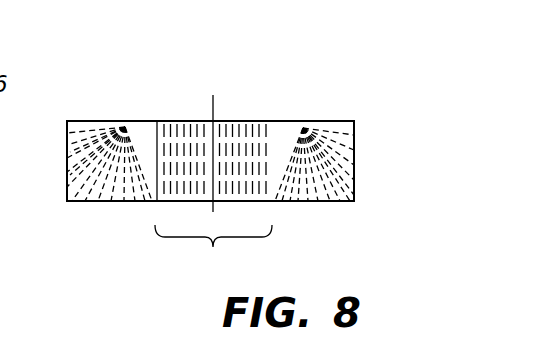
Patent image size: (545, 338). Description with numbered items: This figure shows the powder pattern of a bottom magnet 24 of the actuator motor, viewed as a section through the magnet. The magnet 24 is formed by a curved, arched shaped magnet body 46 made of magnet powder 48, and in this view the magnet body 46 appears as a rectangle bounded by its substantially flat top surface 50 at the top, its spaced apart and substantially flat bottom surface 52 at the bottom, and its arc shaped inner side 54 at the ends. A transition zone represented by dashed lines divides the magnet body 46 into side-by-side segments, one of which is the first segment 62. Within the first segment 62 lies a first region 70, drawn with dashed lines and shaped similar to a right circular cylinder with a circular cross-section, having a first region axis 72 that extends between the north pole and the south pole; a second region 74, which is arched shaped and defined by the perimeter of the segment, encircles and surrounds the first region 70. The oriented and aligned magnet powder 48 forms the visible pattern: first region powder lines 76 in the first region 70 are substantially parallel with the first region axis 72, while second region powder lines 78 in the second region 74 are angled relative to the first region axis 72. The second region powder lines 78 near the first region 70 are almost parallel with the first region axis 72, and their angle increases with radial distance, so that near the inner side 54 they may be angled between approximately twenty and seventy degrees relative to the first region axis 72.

The magnet 24 is at (351, 90).
The magnet body 46 is at (360, 176).
The magnet powder 48 is at (85, 173).
The top surface 50 is at (237, 119).
The bottom surface 52 is at (127, 203).
The inner side 54 is at (357, 128).
The first segment 62 is at (117, 108).
The first region 70 is at (213, 253).
The first region axis 72 is at (213, 103).
The second region 74 is at (329, 210).
The first region powder lines 76 is at (168, 119).
The second region powder lines 78 is at (88, 152).